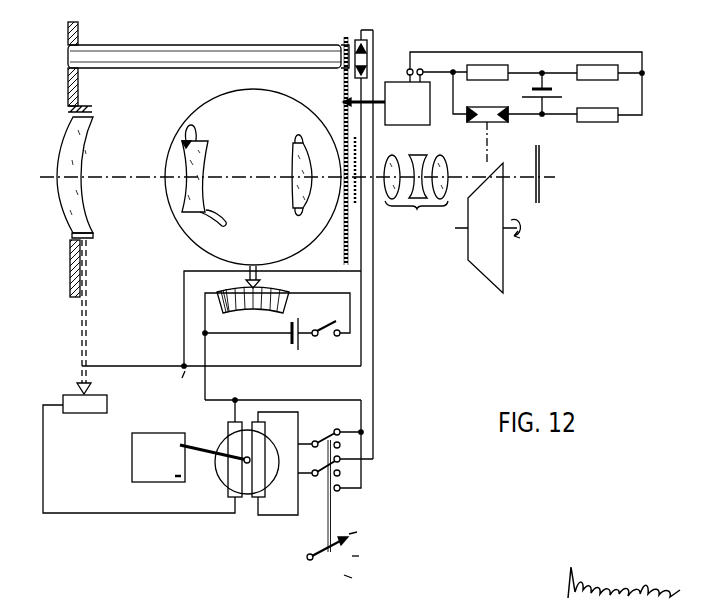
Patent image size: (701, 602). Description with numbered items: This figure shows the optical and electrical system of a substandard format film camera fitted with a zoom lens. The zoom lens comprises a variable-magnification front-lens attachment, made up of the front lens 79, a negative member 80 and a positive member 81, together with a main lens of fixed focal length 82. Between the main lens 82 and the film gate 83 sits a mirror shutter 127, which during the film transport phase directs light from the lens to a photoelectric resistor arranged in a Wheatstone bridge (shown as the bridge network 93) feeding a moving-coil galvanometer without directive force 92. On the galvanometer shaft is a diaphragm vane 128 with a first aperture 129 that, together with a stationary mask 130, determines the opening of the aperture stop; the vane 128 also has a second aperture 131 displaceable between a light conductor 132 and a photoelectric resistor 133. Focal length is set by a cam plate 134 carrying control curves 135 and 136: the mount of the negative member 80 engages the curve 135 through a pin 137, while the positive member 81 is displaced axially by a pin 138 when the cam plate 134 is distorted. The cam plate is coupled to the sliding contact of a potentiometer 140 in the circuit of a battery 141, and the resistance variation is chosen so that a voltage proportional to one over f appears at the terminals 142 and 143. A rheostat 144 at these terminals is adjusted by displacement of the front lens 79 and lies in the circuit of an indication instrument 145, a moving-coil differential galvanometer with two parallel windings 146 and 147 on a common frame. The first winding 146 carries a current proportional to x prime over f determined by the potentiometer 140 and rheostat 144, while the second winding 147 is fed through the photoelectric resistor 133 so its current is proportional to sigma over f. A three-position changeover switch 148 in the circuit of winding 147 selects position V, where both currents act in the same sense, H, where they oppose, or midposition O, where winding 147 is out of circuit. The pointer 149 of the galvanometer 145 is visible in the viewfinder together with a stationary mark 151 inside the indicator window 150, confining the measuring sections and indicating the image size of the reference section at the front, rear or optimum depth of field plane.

The front lens 79 is at (68, 140).
The negative member 80 is at (185, 200).
The positive member 81 is at (293, 195).
The main lens of fixed focal length 82 is at (416, 194).
The film gate 83 is at (545, 190).
The moving-coil galvanometer without directive force 92 is at (386, 97).
The bridge circuit 93 is at (628, 97).
The mirror shutter 127 is at (497, 264).
The diaphragm vane 128 is at (344, 250).
The first aperture 129 is at (342, 170).
The stationary mask 130 is at (358, 186).
The second aperture 131 is at (341, 50).
The light conductor 132 is at (184, 49).
The photoelectric resistor 133 is at (365, 55).
The cam plate 134 is at (203, 236).
The control curve 135 is at (189, 127).
The control curve 136 is at (294, 138).
The pin 137 is at (190, 176).
The pin 138 is at (300, 171).
The potentiometer 140 is at (253, 309).
The battery 141 is at (290, 333).
The terminal 142 is at (204, 333).
The terminal 143 is at (167, 383).
The rheostat 144 is at (68, 396).
The indication instrument 145 is at (218, 470).
The first winding 146 is at (234, 498).
The second winding 147 is at (258, 498).
The changeover switch 148 is at (323, 475).
The pointer 149 is at (208, 446).
The indicator 150 is at (138, 466).
The stationary mark 151 is at (172, 478).